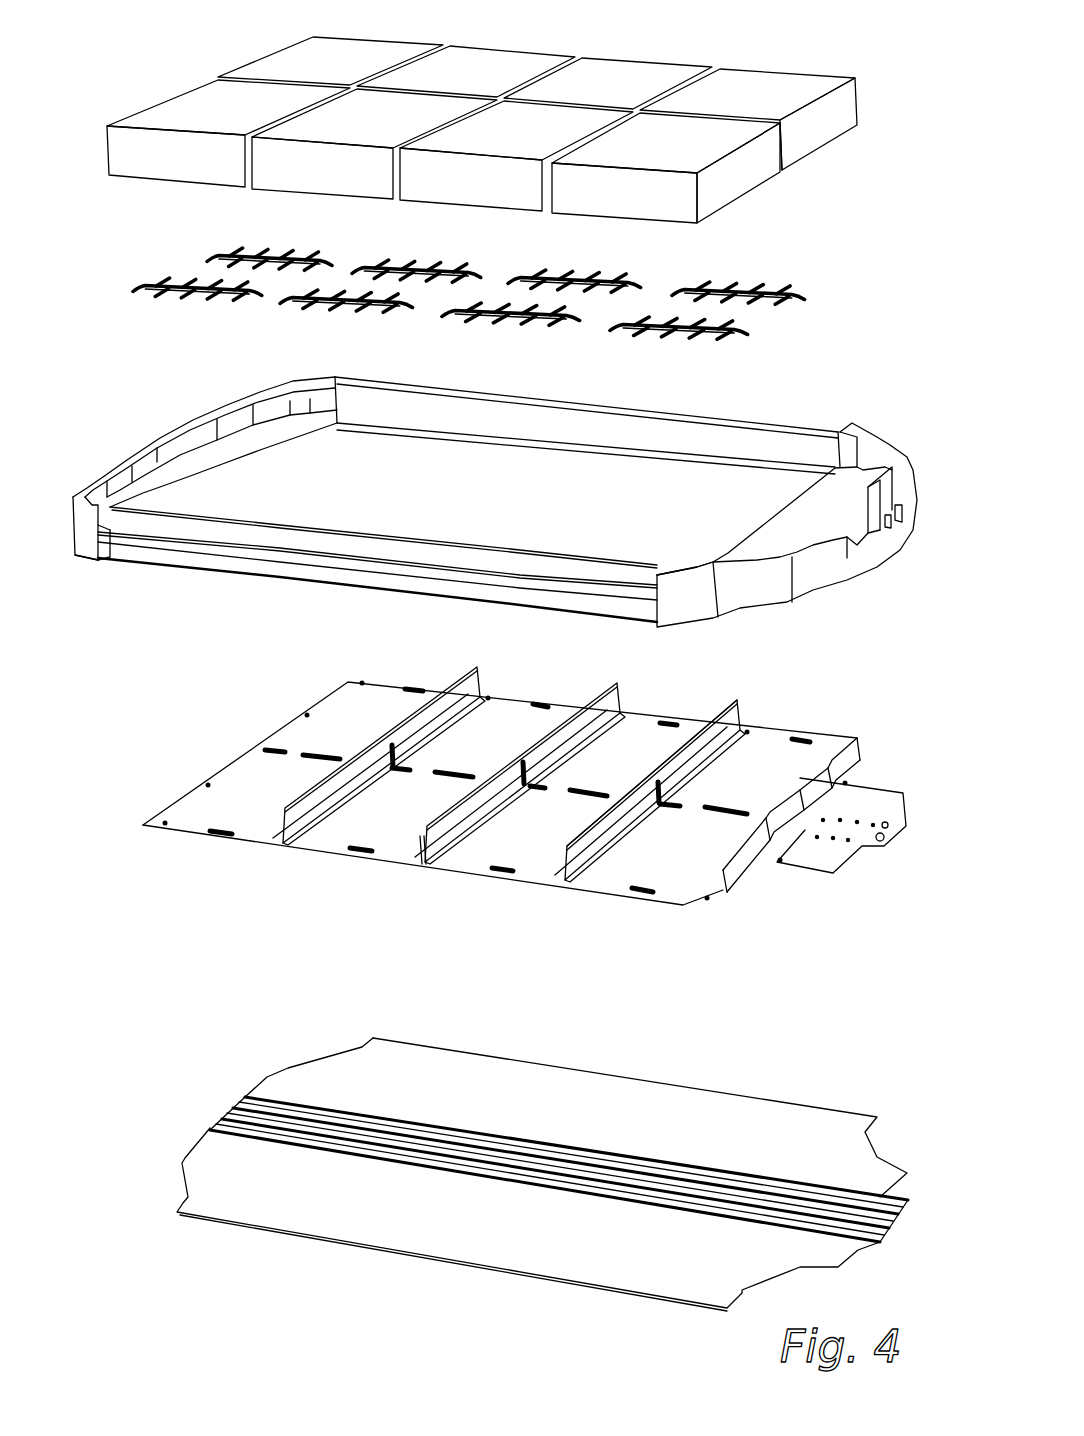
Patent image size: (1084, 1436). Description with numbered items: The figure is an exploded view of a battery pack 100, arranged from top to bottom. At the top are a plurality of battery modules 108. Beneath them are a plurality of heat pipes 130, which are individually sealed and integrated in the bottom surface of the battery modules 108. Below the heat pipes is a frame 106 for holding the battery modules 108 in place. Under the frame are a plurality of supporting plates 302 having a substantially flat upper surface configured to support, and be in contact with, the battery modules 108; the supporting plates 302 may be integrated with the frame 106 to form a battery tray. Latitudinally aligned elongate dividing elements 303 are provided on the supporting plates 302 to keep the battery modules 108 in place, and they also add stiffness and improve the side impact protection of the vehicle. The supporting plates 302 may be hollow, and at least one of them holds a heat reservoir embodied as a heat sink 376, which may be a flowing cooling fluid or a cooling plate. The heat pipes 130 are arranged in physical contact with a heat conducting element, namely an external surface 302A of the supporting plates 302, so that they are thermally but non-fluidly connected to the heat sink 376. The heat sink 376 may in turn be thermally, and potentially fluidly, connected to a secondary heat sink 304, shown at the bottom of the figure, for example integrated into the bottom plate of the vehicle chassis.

The battery pack 100 is at (124, 70).
The battery modules 108 is at (792, 79).
The heat pipes 130 is at (848, 258).
The frame 106 is at (800, 446).
The supporting plates 302 is at (617, 878).
The external surface 302A is at (572, 818).
The dividing elements 303 is at (420, 840).
The heat sink 376 is at (485, 853).
The secondary heat sink 304 is at (684, 1168).